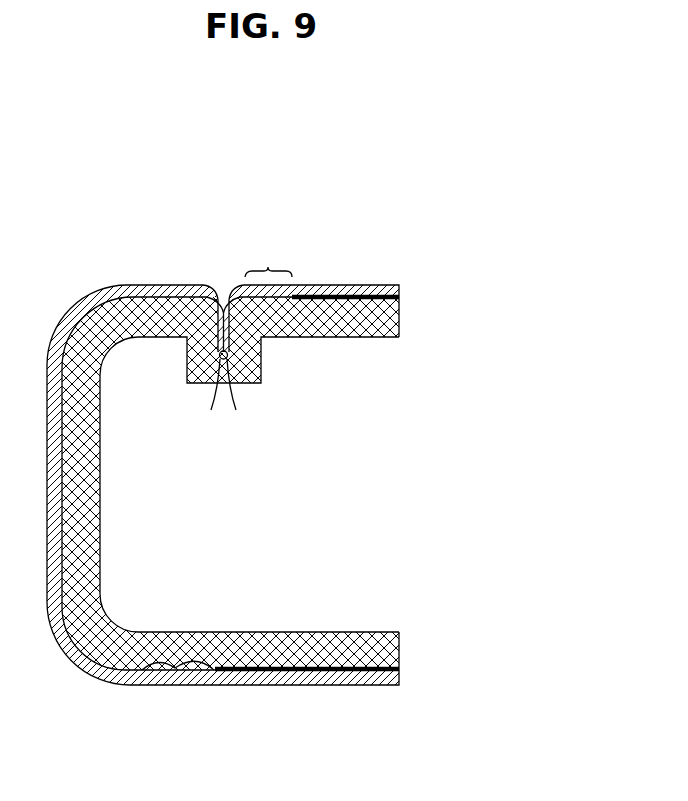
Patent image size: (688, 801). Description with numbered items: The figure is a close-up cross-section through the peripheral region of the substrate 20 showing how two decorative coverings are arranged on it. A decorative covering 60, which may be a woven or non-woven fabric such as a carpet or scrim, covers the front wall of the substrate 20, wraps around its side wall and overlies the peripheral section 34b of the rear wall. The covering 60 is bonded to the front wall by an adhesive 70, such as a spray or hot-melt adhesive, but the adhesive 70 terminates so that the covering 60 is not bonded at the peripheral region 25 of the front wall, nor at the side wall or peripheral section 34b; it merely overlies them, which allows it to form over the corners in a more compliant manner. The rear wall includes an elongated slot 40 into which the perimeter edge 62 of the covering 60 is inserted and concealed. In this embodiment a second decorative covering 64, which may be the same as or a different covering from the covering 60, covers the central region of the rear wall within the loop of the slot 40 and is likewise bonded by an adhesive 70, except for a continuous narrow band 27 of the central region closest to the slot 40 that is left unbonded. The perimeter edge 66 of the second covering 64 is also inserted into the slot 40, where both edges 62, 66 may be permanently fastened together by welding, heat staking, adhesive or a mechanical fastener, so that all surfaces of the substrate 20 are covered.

The substrate 20 is at (424, 626).
The peripheral region of the front wall 25 is at (177, 660).
The continuous narrow band 27 is at (268, 254).
The peripheral section of the rear wall 34b is at (165, 298).
The elongated slot 40 is at (225, 270).
The decorative covering 60 is at (385, 679).
The perimeter edge of the decorative covering 62 is at (203, 403).
The second decorative covering 64 is at (381, 295).
The perimeter edge of the second decorative covering 66 is at (244, 403).
The adhesive 70 is at (399, 297).